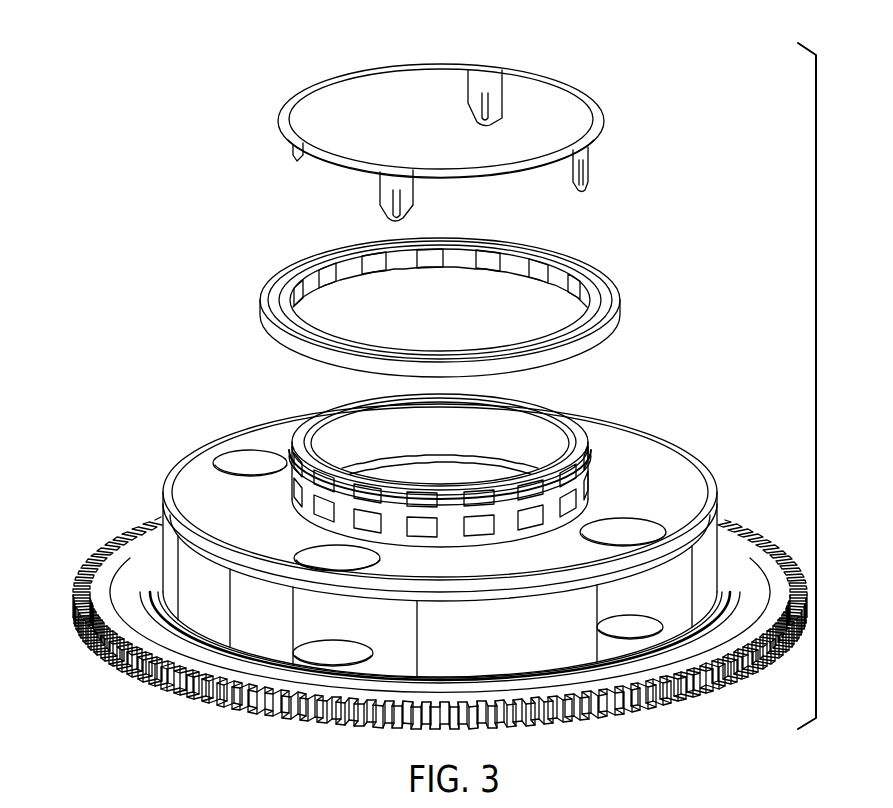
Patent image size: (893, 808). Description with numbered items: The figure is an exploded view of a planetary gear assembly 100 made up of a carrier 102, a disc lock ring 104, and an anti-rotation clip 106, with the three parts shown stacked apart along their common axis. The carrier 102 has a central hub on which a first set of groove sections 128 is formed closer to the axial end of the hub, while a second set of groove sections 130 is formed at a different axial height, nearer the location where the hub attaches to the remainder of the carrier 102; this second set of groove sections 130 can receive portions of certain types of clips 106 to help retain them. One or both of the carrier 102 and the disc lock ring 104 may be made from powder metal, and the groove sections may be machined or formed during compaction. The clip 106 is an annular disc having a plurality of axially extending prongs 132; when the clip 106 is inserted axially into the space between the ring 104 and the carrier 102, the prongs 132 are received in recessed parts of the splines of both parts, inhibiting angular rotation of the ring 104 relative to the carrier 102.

The planetary gear assembly 100 is at (668, 230).
The carrier 102 is at (744, 484).
The disc lock ring 104 is at (636, 325).
The anti-rotation clip 106 is at (252, 147).
The first set of groove sections 128 is at (363, 500).
The second set of groove sections 130 is at (583, 100).
The prongs 132 is at (473, 97).